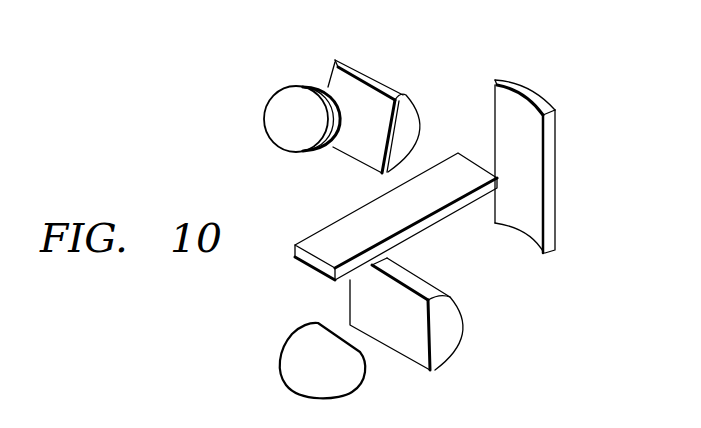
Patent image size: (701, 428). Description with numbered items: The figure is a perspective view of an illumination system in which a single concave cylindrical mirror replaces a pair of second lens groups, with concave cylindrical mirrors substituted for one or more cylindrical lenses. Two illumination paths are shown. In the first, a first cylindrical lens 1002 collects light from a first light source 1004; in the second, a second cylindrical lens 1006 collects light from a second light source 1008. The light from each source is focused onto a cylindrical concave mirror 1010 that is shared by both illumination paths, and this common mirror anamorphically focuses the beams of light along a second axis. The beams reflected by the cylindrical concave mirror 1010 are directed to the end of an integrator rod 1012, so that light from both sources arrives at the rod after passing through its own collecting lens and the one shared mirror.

The first cylindrical lens 1002 is at (368, 73).
The first light source 1004 is at (297, 95).
The second cylindrical lens 1006 is at (450, 327).
The second light source 1008 is at (310, 347).
The cylindrical concave mirror 1010 is at (550, 207).
The integrator rod 1012 is at (322, 240).